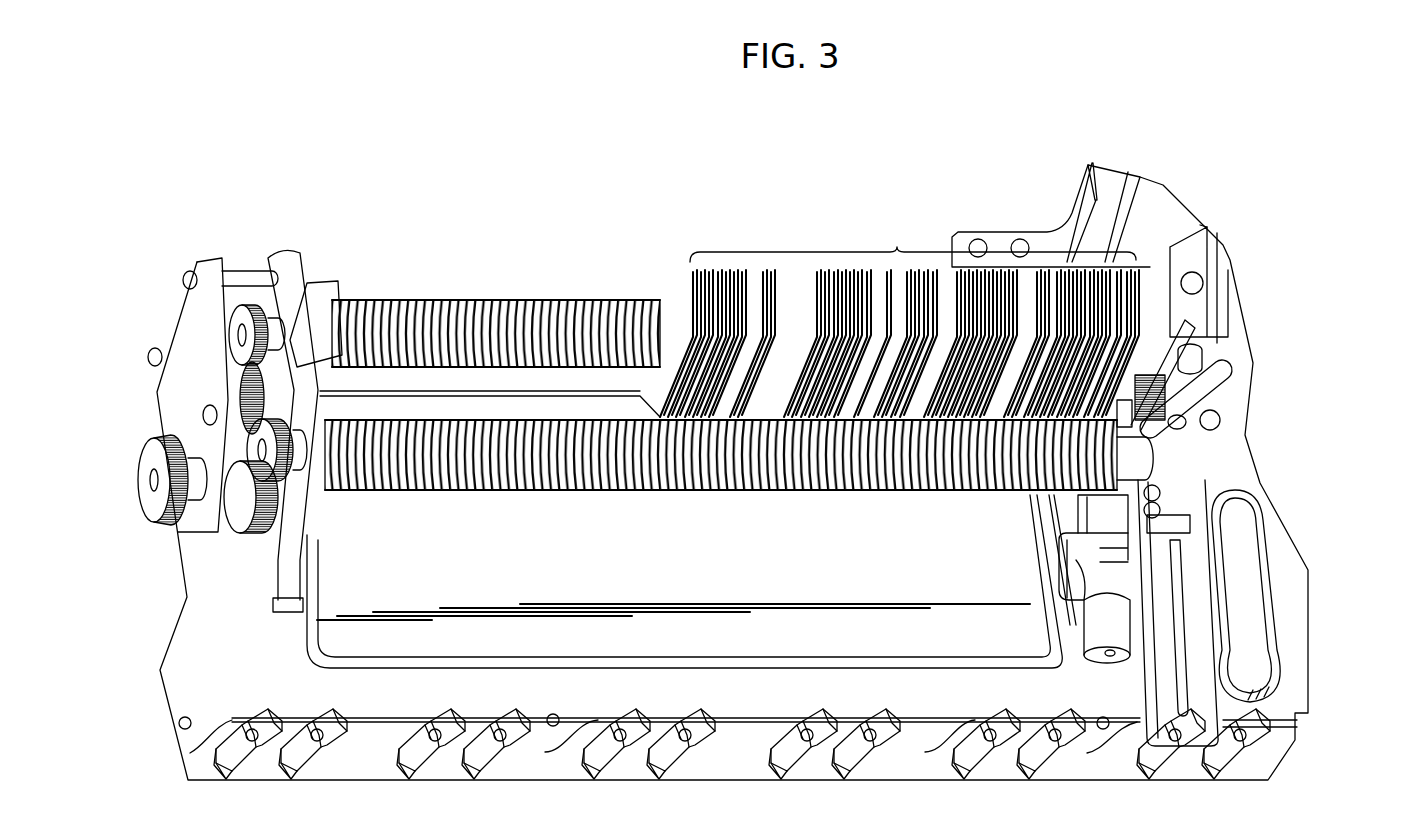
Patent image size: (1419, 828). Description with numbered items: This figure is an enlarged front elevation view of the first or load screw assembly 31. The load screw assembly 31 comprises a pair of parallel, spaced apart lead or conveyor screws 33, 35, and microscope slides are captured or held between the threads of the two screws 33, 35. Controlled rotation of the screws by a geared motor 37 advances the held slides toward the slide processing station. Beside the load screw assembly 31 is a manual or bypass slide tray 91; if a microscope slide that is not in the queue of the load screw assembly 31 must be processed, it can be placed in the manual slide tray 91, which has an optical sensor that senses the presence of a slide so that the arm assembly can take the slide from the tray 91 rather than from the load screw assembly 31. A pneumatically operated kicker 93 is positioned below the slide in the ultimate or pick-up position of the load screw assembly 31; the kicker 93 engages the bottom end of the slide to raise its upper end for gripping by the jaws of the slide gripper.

The load screw assembly 31 is at (421, 272).
The conveyor screw 33 is at (527, 487).
The conveyor screw 35 is at (470, 300).
The geared motor 37 is at (225, 527).
The manual slide tray 91 is at (1255, 655).
The kicker 93 is at (1103, 552).